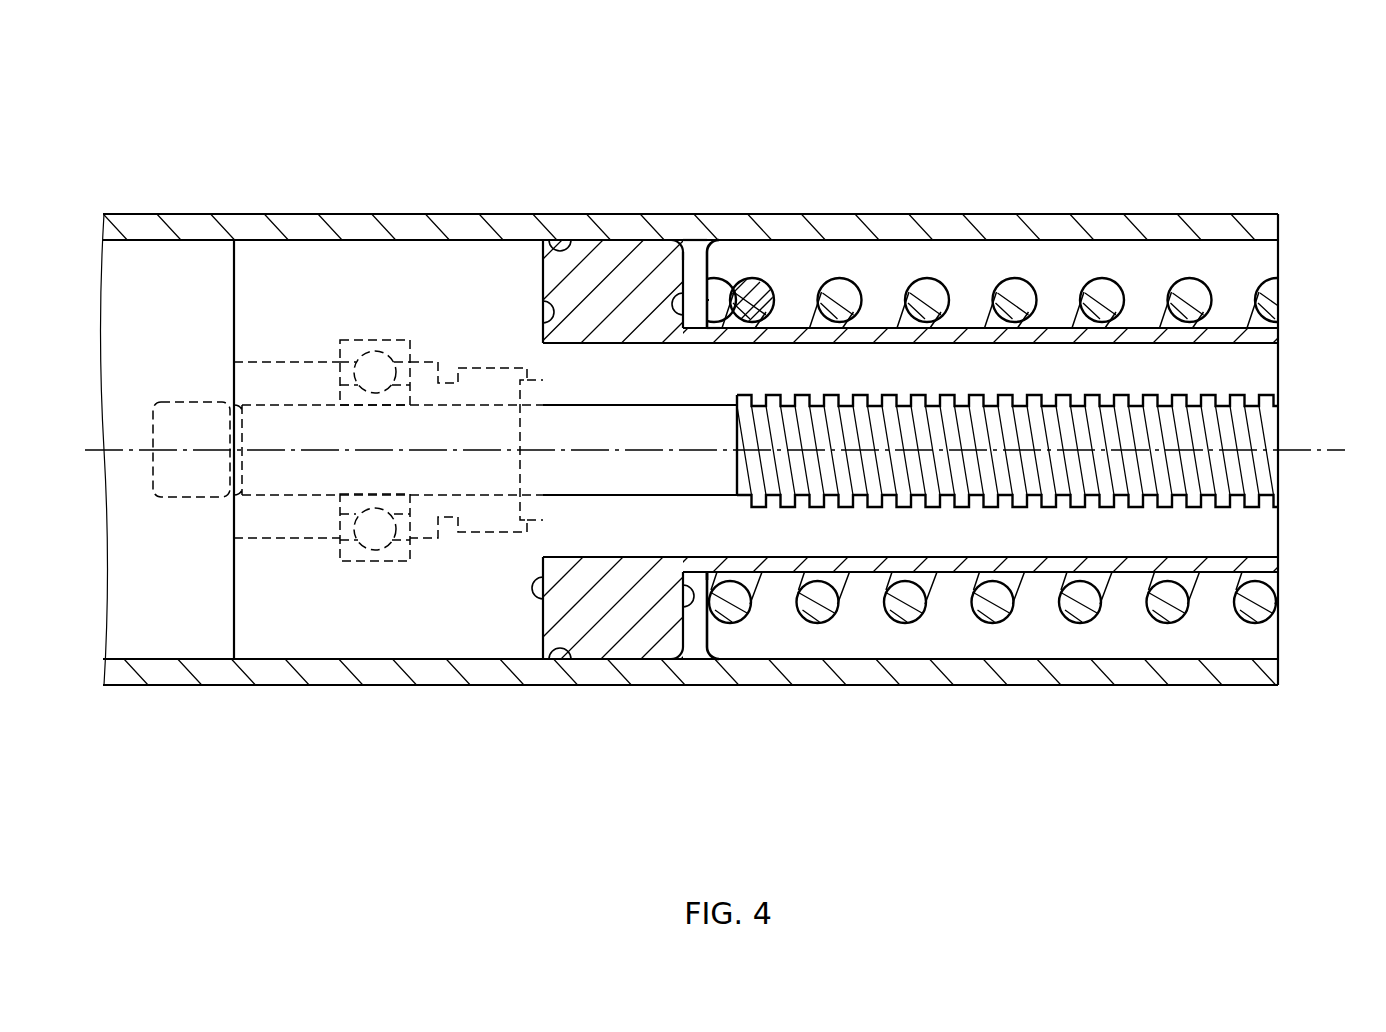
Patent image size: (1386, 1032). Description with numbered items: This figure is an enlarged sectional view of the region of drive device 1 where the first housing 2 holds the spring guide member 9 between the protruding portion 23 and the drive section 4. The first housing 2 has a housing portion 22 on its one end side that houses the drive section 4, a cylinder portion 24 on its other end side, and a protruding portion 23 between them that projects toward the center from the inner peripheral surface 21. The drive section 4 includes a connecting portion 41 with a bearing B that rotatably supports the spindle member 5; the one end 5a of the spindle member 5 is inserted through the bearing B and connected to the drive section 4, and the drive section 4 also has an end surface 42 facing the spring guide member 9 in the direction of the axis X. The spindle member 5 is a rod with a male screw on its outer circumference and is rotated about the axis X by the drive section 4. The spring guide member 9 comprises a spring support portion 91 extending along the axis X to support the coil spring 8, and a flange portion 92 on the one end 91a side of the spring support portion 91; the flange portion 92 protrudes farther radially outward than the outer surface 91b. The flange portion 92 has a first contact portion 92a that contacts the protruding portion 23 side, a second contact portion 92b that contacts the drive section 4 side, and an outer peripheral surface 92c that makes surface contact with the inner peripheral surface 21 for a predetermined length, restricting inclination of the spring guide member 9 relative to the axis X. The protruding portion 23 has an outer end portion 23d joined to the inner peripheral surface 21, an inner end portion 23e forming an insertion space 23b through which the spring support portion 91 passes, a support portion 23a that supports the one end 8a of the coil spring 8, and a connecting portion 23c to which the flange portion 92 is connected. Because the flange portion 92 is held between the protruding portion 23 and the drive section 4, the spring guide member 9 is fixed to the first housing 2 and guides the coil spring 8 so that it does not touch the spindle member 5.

The drive device 1 is at (1290, 82).
The first housing 2 is at (1191, 196).
The drive section 4 is at (290, 627).
The spindle member 5 is at (1128, 522).
The one end of spindle member 5a is at (263, 502).
The coil spring 8 is at (1111, 260).
The one end of coil spring 8a is at (757, 289).
The spring guide member 9 is at (1052, 316).
The inner peripheral surface 21 is at (543, 257).
The housing portion 22 is at (299, 220).
The protruding portion 23 is at (714, 258).
The support portion 23a is at (732, 295).
The insertion space 23b is at (686, 576).
The connecting portion 23c is at (683, 250).
The outer end portion 23d is at (695, 251).
The inner end portion 23e is at (718, 302).
The cylinder portion 24 is at (1213, 225).
The connecting portion 41 is at (313, 527).
The end surface 42 is at (543, 320).
The spring support portion 91 is at (961, 568).
The one end of spring support portion 91a is at (632, 350).
The outer surface of spring support portion 91b is at (1140, 326).
The flange portion 92 is at (593, 279).
The first contact portion 92a is at (680, 303).
The second contact portion 92b is at (543, 282).
The outer peripheral surface 92c is at (618, 240).
The bearing B is at (402, 558).
The axis X is at (1338, 440).